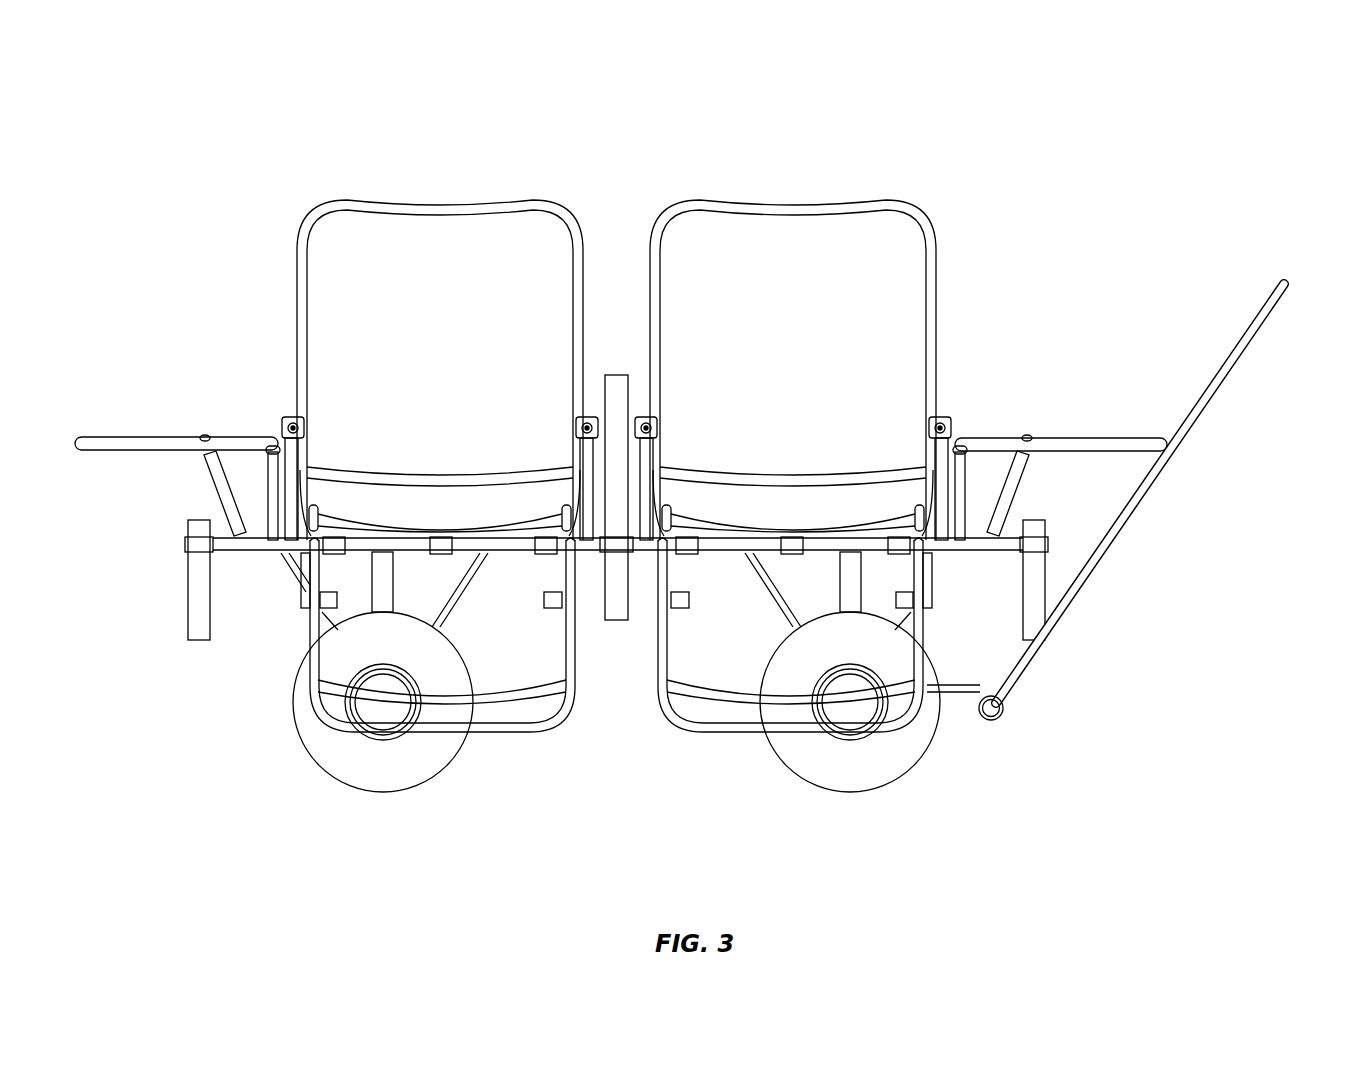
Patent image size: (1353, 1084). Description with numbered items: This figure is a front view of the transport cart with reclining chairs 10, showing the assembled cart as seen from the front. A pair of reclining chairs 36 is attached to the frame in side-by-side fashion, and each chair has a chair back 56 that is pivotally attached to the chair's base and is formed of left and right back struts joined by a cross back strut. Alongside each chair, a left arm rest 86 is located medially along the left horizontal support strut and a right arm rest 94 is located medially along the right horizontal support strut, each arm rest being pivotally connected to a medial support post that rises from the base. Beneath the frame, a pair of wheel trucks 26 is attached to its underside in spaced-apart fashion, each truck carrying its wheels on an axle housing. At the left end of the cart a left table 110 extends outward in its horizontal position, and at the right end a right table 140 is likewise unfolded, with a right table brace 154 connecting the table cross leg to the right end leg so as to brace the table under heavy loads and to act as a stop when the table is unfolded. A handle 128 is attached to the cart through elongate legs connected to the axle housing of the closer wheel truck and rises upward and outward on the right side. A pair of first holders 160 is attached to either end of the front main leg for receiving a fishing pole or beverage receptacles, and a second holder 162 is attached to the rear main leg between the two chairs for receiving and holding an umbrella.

The transport cart with reclining chairs 10 is at (1095, 100).
The wheel trucks 26 is at (310, 750).
The reclining chairs 36 is at (437, 180).
The chair back 56 is at (302, 226).
The left arm rest 86 is at (304, 423).
The right arm rest 94 is at (578, 420).
The left table 110 is at (132, 418).
The handle 128 is at (1295, 270).
The right table 140 is at (1105, 418).
The right table brace 154 is at (1015, 478).
The first holders 160 is at (200, 586).
The second holder 162 is at (620, 388).